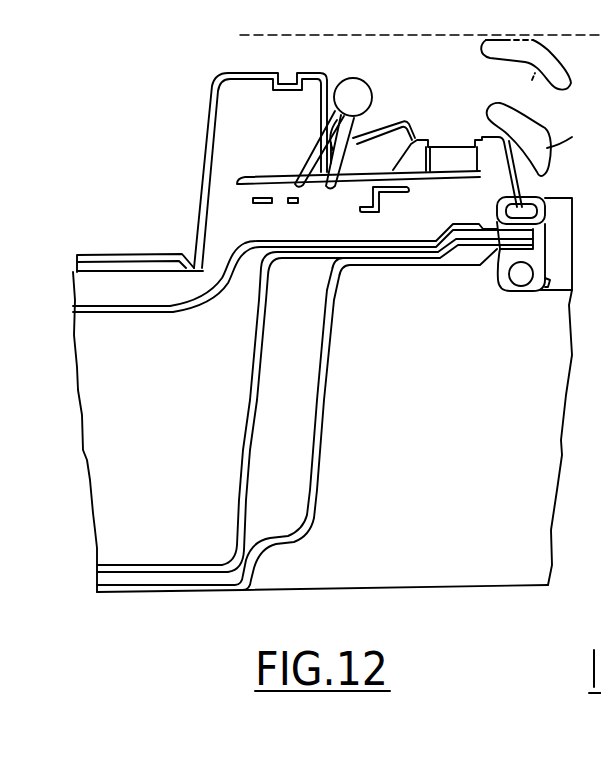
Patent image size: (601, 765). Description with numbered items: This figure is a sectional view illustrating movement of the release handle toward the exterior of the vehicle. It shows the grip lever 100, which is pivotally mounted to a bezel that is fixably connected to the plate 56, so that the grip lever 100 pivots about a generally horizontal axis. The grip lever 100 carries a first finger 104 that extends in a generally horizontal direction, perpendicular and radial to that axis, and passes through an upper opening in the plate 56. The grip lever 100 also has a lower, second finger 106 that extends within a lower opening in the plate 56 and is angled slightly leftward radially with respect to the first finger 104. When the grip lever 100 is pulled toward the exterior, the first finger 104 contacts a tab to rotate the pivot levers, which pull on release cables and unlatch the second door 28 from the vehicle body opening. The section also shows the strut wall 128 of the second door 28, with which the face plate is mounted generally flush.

The second door 28 is at (155, 593).
The plate 56 is at (411, 144).
The grip lever 100 is at (537, 93).
The first finger 104 is at (332, 185).
The second finger 106 is at (285, 175).
The strut wall 128 is at (320, 461).